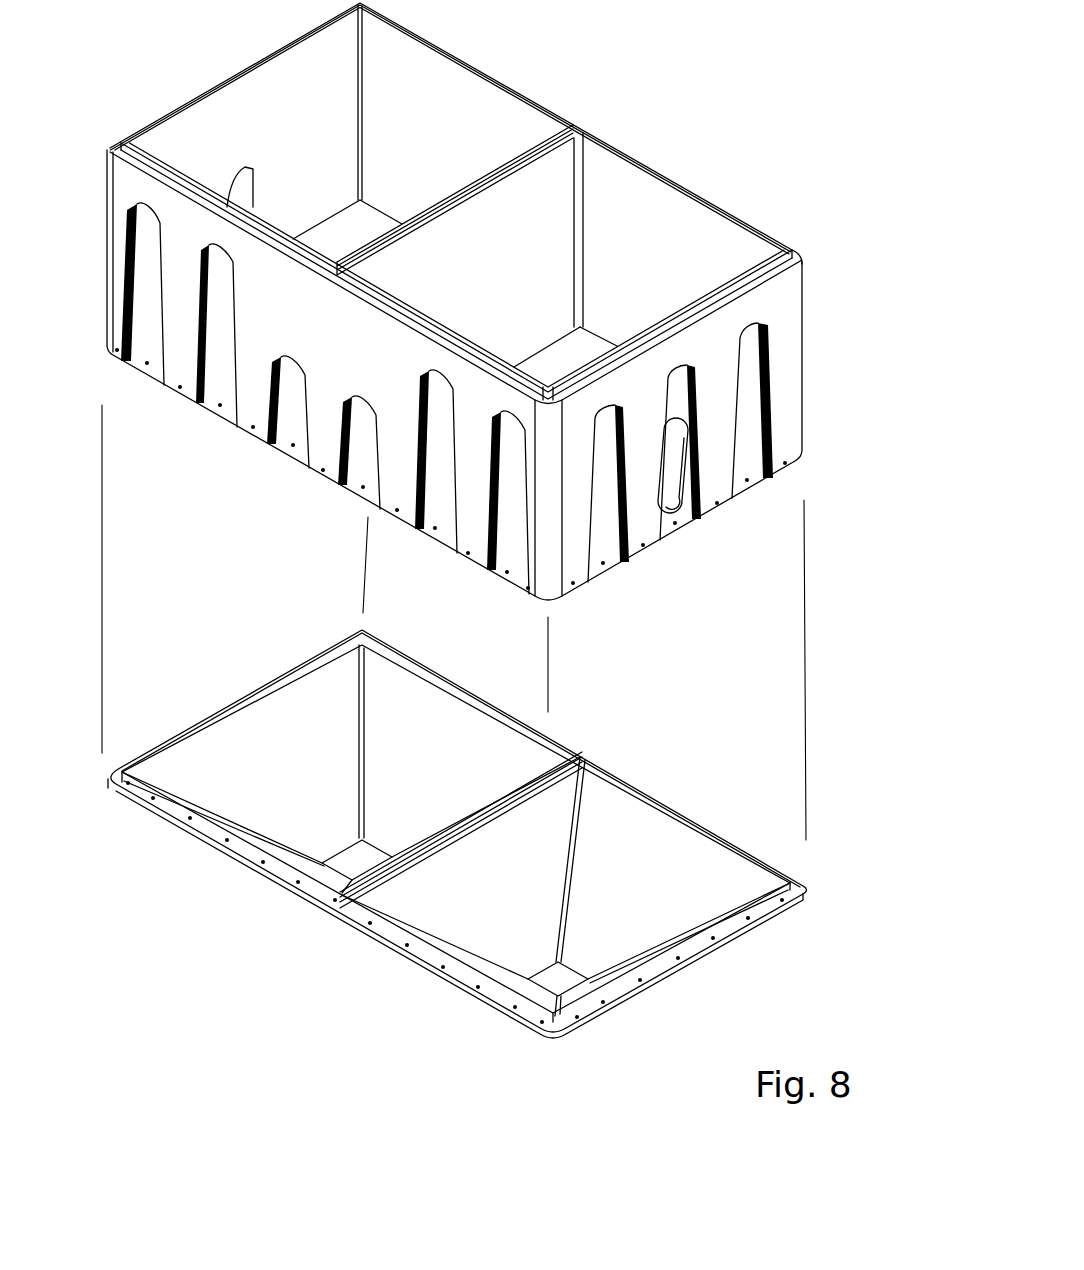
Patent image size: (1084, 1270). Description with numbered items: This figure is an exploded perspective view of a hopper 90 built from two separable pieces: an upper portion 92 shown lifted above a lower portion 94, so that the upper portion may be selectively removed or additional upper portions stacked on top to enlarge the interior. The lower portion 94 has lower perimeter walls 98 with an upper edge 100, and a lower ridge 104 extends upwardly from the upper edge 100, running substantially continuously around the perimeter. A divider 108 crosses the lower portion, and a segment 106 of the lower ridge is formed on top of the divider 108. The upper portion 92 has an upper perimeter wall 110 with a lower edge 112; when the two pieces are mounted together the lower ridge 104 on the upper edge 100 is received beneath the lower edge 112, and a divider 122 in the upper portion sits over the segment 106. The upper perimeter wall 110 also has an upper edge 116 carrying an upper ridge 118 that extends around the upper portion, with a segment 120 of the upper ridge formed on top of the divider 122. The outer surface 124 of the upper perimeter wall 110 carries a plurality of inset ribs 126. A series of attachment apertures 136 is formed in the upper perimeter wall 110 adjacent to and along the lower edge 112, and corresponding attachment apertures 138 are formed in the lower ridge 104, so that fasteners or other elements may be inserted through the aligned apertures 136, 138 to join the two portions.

The hopper 90 is at (667, 107).
The upper portion 92 is at (783, 333).
The lower portion 94 is at (752, 935).
The lower perimeter walls 98 is at (632, 840).
The upper edge 100 is at (390, 950).
The lower ridge 104 is at (467, 978).
The segment of the lower ridge 106 is at (545, 763).
The divider 108 is at (358, 917).
The upper perimeter wall 110 is at (690, 213).
The lower edge 112 is at (613, 567).
The upper edge 116 is at (772, 297).
The upper ridge 118 is at (772, 268).
The segment of the upper ridge 120 is at (537, 140).
The divider 122 is at (545, 203).
The outer surface 124 is at (717, 477).
The inset ribs 126 is at (753, 458).
The attachment apertures 136 is at (292, 447).
The attachment apertures 138 is at (577, 1017).